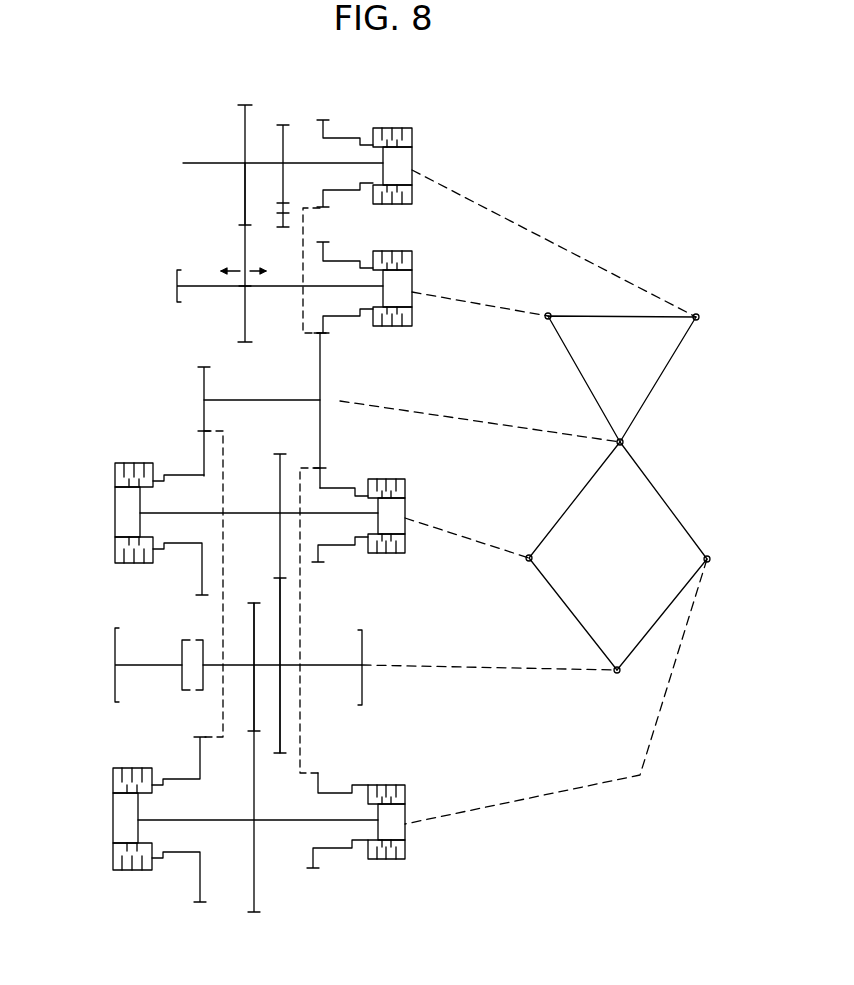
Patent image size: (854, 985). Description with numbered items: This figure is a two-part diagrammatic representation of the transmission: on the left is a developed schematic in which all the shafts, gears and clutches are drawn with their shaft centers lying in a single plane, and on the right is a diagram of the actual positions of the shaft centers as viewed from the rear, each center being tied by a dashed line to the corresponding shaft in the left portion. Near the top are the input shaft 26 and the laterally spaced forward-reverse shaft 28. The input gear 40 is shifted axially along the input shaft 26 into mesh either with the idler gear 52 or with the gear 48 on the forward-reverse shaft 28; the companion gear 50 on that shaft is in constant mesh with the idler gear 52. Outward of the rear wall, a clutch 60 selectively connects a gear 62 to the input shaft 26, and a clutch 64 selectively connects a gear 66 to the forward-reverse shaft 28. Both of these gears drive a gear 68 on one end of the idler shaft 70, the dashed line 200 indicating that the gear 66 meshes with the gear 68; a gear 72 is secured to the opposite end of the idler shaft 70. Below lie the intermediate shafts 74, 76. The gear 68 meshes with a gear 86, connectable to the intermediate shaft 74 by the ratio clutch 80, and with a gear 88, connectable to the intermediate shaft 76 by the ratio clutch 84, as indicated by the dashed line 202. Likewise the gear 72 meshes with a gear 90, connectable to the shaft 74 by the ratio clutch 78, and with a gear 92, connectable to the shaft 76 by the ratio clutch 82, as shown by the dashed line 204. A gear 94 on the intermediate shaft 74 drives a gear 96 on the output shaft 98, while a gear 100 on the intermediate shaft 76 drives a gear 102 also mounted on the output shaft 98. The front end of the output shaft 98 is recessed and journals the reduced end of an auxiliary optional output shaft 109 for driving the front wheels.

The input shaft 26 is at (209, 288).
The forward-reverse shaft 28 is at (198, 162).
The input gear 40 is at (245, 241).
The gear 48 is at (245, 194).
The gear 50 is at (283, 132).
The idler gear 52 is at (285, 217).
The clutch 60 is at (379, 304).
The gear 62 is at (327, 333).
The clutch 64 is at (386, 147).
The gear 66 is at (325, 129).
The gear 68 is at (324, 376).
The idler shaft 70 is at (244, 400).
The gear 72 is at (203, 383).
The intermediate shaft 74 is at (243, 513).
The intermediate shaft 76 is at (283, 820).
The ratio clutch 78 is at (143, 505).
The ratio clutch 80 is at (376, 498).
The ratio clutch 82 is at (142, 822).
The ratio clutch 84 is at (369, 842).
The gear 86 is at (322, 478).
The gear 88 is at (318, 863).
The gear 90 is at (204, 448).
The gear 92 is at (198, 884).
The gear 94 is at (280, 472).
The gear 96 is at (280, 602).
The output shaft 98 is at (331, 668).
The gear 100 is at (255, 895).
The gear 102 is at (252, 616).
The auxiliary optional output shaft 109 is at (155, 667).
The dashed line 200 is at (302, 322).
The dashed line 202 is at (302, 622).
The dashed line 204 is at (224, 574).